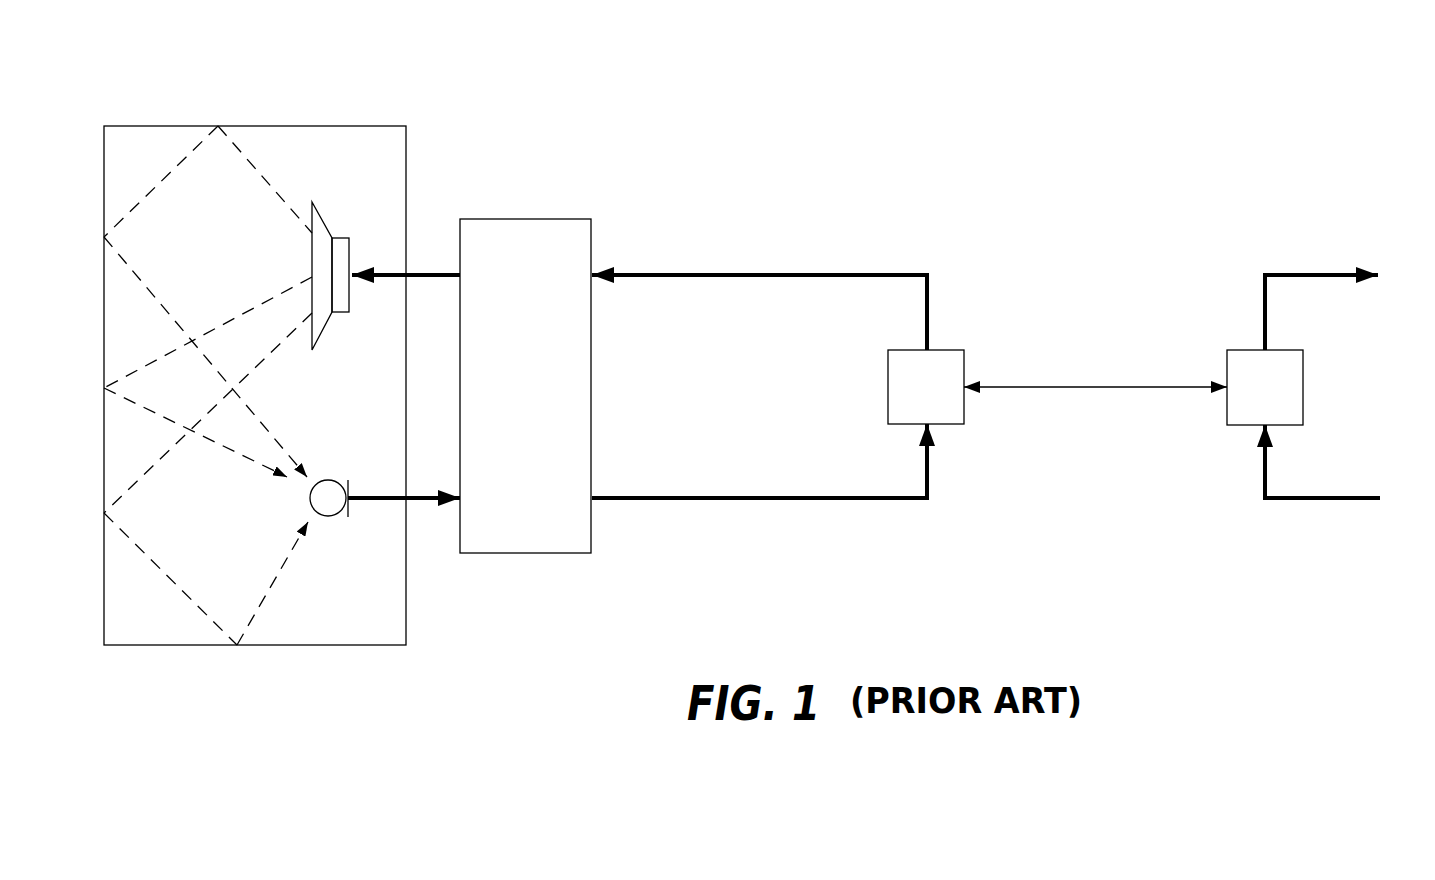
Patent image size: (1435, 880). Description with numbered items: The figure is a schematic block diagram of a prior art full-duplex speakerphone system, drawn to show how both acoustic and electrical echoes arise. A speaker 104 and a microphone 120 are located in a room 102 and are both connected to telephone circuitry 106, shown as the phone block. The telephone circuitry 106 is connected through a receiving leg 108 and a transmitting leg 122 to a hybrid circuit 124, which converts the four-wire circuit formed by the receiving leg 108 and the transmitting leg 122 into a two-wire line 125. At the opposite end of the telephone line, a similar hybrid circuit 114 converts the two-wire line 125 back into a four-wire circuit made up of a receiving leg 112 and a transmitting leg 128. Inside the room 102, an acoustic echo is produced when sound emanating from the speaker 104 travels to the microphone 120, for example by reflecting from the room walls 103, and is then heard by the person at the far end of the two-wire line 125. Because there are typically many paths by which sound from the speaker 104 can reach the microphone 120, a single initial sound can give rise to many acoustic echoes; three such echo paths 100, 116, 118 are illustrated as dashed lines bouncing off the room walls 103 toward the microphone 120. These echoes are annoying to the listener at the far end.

The echo path 100 is at (241, 277).
The room 102 is at (315, 361).
The room walls 103 is at (255, 348).
The speaker 104 is at (409, 254).
The telephone circuitry 106 is at (557, 353).
The receiving leg 108 is at (759, 265).
The receiving leg 112 is at (1288, 265).
The hybrid circuit 114 is at (1326, 381).
The echo path 116 is at (208, 360).
The echo path 118 is at (257, 522).
The microphone 120 is at (425, 560).
The transmitting leg 122 is at (759, 503).
The hybrid circuit 124 is at (985, 431).
The two-wire line 125 is at (1095, 392).
The transmitting leg 128 is at (1310, 495).